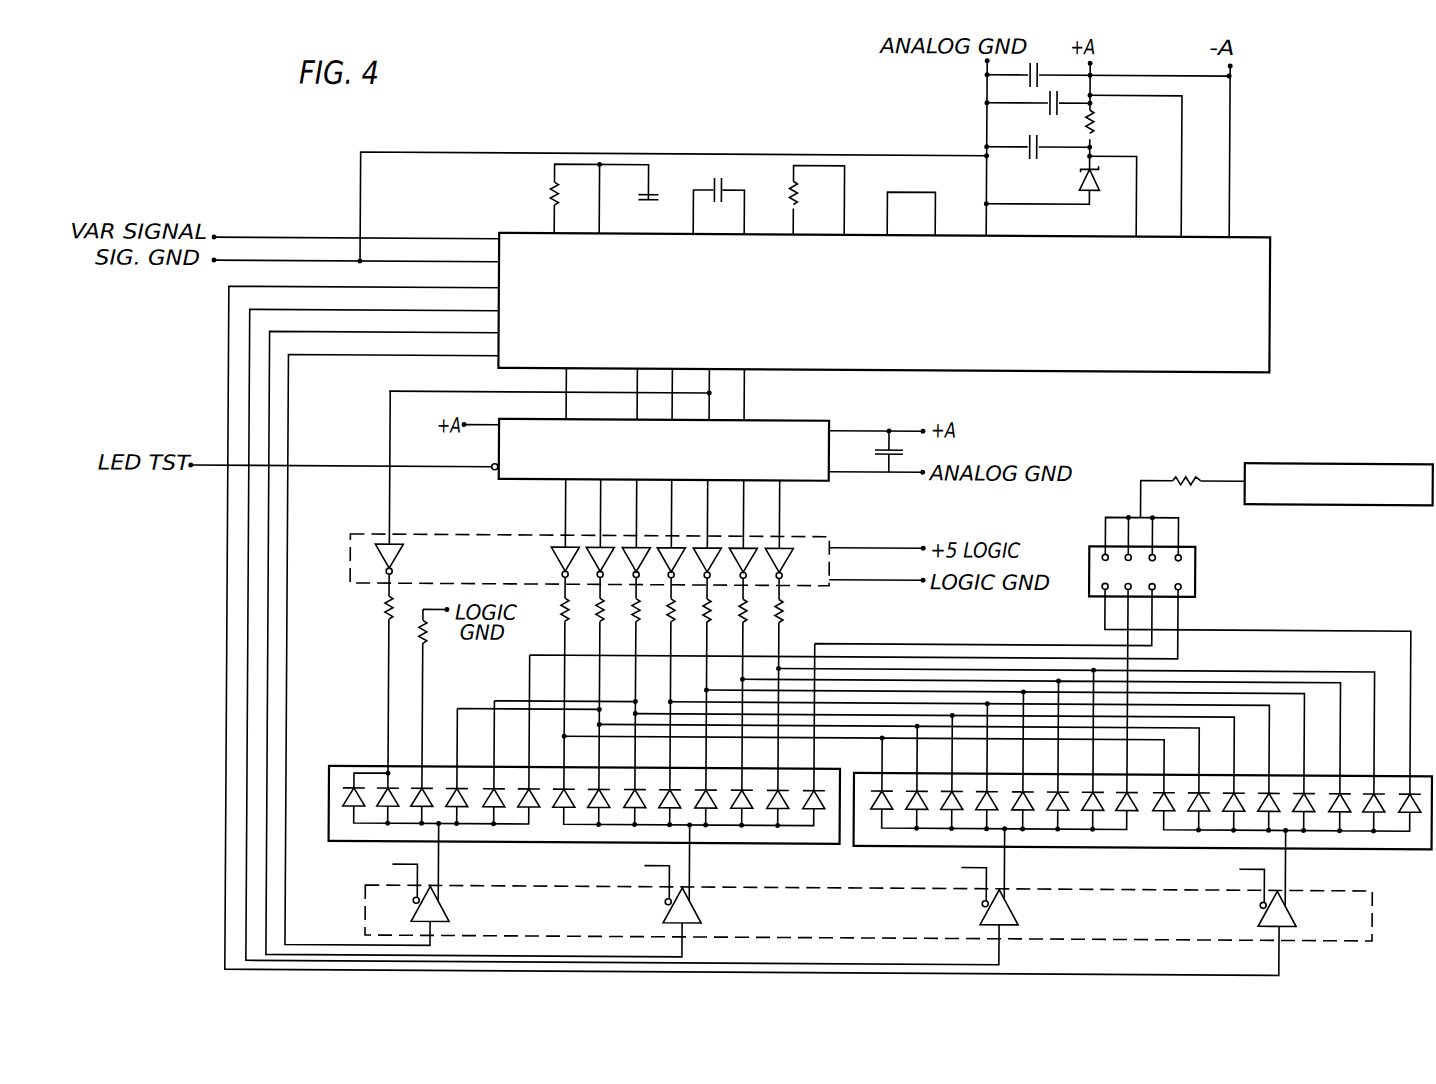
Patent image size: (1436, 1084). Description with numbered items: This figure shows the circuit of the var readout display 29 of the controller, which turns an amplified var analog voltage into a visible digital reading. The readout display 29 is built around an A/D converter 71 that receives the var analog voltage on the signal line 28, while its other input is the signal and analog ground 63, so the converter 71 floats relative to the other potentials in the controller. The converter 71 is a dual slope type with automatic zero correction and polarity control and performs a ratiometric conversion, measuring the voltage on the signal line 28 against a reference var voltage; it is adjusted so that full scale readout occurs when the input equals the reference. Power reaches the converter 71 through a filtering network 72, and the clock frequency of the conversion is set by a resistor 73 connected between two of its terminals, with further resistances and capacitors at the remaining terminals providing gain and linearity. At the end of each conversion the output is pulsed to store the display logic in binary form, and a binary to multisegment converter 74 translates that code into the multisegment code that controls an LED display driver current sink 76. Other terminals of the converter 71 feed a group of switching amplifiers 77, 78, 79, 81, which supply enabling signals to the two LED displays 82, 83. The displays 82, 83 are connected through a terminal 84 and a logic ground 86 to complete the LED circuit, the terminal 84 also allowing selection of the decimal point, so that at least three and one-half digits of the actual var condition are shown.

The signal line 28 is at (328, 237).
The readout display 29 is at (1360, 408).
The signal and analog ground 63 is at (979, 61).
The A/D converter 71 is at (1266, 294).
The filtering network 72 is at (1090, 118).
The resistor 73 is at (793, 196).
The binary to multisegment converter 74 is at (797, 417).
The LED display driver current sink 76 is at (802, 535).
The switching amplifier 77 is at (449, 912).
The switching amplifier 78 is at (701, 912).
The switching amplifier 79 is at (1018, 912).
The switching amplifier 81 is at (1296, 912).
The display 82 is at (343, 762).
The display 83 is at (1379, 842).
The terminal 84 is at (1195, 568).
The logic ground 86 is at (1348, 501).